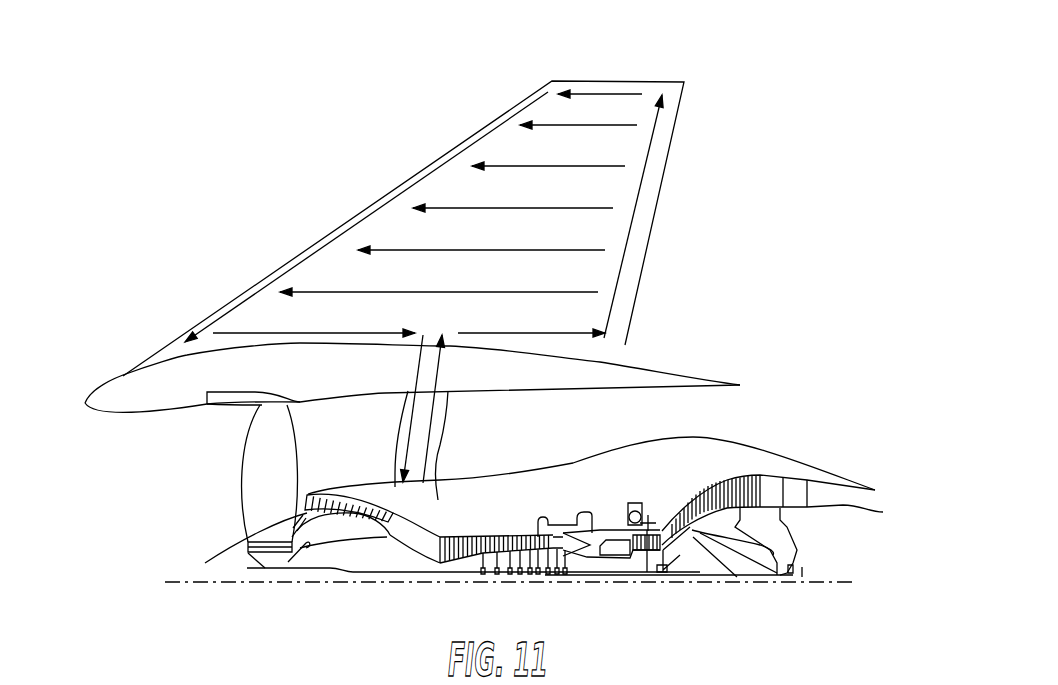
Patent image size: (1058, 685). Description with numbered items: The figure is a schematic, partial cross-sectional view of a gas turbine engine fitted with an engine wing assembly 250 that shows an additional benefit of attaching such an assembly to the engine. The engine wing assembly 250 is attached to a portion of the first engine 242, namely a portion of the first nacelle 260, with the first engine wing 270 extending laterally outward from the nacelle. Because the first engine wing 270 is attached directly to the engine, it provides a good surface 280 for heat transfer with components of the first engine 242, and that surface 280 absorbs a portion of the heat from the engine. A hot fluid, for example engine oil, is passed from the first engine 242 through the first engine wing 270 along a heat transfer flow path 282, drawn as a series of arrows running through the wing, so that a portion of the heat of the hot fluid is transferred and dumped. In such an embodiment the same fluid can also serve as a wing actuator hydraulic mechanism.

The first engine 242 is at (887, 550).
The first engine wing assembly 250 is at (705, 130).
The first nacelle 260 is at (108, 398).
The first engine wing 270 is at (358, 212).
The surface 280 is at (555, 236).
The heat transfer flow path 282 is at (617, 123).